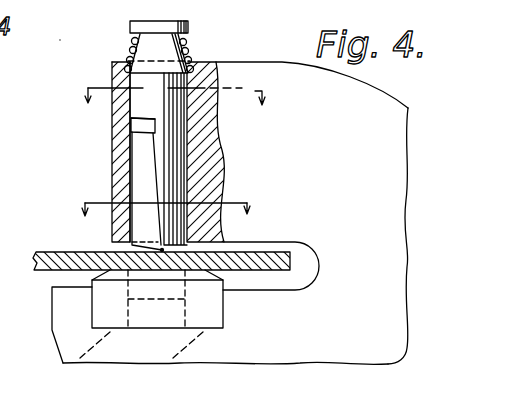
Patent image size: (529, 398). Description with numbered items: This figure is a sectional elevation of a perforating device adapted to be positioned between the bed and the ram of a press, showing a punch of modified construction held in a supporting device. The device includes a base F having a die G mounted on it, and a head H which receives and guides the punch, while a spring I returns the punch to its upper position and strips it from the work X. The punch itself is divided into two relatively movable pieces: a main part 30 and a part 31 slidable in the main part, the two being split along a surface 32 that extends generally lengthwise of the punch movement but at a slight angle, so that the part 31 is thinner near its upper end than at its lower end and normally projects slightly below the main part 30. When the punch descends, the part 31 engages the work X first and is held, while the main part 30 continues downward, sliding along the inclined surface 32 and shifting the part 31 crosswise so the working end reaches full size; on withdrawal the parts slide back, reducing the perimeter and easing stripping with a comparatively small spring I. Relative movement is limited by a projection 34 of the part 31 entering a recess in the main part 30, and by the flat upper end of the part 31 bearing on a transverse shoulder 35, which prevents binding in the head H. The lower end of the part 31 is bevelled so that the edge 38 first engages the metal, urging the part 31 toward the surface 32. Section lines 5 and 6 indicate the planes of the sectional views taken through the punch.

The spring I is at (190, 45).
The section line 5- 5 is at (170, 97).
The section line 6- 6 is at (162, 213).
The main part 30 is at (164, 159).
The part 31 is at (133, 223).
The surface 32 is at (148, 163).
The projection 34 is at (153, 132).
The transverse shoulder 35 is at (133, 113).
The edge 38 is at (162, 250).
The work X is at (50, 250).
The die G is at (207, 304).
The head H is at (166, 102).
The base F is at (230, 192).